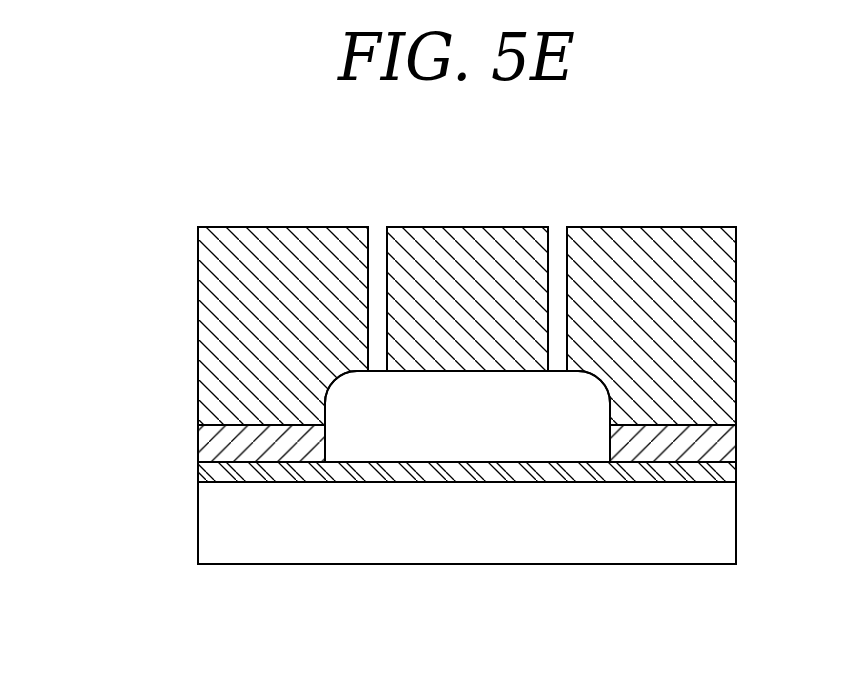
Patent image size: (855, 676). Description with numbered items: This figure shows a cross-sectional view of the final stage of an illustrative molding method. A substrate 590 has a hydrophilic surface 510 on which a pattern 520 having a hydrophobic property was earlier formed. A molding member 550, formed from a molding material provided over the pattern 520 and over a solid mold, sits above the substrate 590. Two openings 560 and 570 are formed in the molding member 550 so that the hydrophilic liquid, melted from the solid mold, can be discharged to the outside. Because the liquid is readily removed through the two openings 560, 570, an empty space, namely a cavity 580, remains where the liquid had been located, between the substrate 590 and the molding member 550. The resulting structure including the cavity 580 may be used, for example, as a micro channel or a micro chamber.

The hydrophilic surface 510 is at (218, 474).
The pattern 520 is at (227, 436).
The molding member 550 is at (237, 299).
The opening 560 is at (375, 248).
The opening 570 is at (557, 248).
The cavity 580 is at (560, 430).
The substrate 590 is at (218, 529).